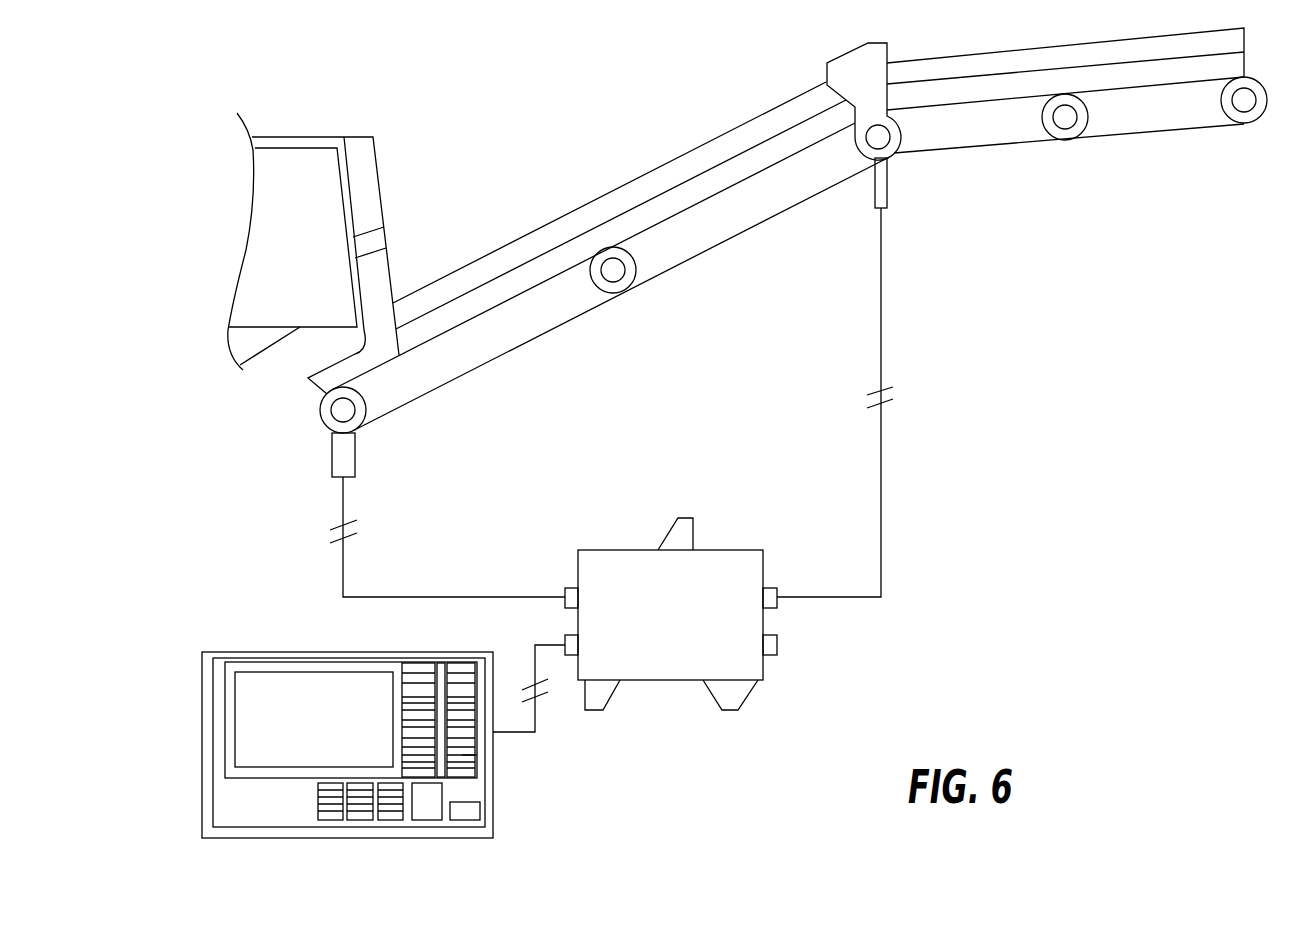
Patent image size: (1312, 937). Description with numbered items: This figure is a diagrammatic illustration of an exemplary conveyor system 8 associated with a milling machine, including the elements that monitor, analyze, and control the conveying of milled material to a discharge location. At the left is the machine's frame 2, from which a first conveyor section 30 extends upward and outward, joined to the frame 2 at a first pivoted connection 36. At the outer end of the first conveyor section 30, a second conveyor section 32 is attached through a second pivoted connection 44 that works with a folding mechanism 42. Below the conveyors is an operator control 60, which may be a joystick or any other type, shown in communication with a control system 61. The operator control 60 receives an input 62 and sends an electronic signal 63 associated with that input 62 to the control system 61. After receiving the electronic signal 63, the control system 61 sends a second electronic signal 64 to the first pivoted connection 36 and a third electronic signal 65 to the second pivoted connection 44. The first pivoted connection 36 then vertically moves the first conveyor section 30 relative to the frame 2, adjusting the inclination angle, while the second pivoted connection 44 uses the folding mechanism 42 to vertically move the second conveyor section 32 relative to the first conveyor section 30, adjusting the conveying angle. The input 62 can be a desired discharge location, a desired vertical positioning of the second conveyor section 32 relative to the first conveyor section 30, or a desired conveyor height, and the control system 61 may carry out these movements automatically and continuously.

The frame 2 is at (285, 155).
The conveyor system 8 is at (668, 80).
The first conveyor section 30 is at (510, 320).
The second conveyor section 32 is at (1142, 133).
The first pivoted connection 36 is at (345, 408).
The folding mechanism 42 is at (895, 172).
The second pivoted connection 44 is at (878, 137).
The operator control 60 is at (347, 838).
The control system 61 is at (684, 627).
The input 62 is at (477, 755).
The electronic signal 63 is at (536, 711).
The second electronic signal 64 is at (340, 538).
The third electronic signal 65 is at (887, 383).